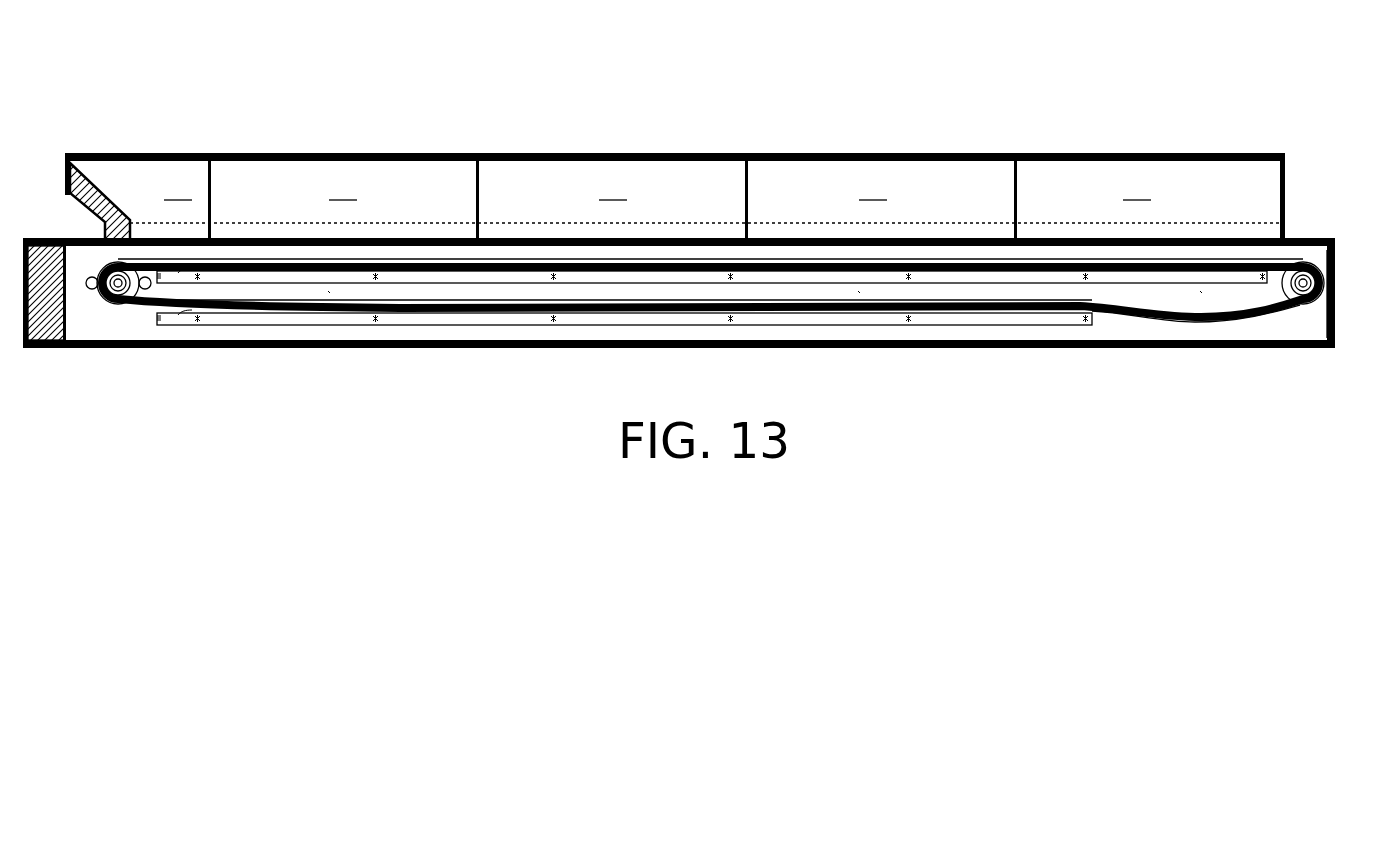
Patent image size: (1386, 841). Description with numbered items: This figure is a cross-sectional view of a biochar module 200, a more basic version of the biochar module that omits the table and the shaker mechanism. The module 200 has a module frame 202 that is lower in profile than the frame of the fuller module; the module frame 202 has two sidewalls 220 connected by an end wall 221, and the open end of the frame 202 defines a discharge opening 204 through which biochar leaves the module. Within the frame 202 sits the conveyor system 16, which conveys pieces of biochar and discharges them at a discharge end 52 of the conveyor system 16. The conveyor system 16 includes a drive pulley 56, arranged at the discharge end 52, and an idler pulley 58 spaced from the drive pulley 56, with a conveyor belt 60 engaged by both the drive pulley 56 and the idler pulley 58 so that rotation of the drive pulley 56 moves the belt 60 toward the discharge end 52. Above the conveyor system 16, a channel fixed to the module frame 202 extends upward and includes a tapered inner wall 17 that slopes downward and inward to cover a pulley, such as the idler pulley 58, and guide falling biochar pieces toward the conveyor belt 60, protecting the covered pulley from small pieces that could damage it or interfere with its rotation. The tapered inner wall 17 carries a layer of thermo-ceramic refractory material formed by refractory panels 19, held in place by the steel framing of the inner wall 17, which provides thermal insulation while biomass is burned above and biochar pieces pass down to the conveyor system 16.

The biochar module 200 is at (840, 88).
The tapered inner wall 17 is at (502, 153).
The refractory panels 19 is at (100, 215).
The module frame 202 is at (64, 232).
The discharge opening 204 is at (1322, 324).
The end wall 221 is at (45, 342).
The conveyor system 16 is at (544, 343).
The sidewalls 220 is at (407, 330).
The idler pulley 58 is at (120, 285).
The drive pulley 56 is at (1303, 286).
The conveyor belt 60 is at (1180, 312).
The discharge end 52 is at (1334, 283).